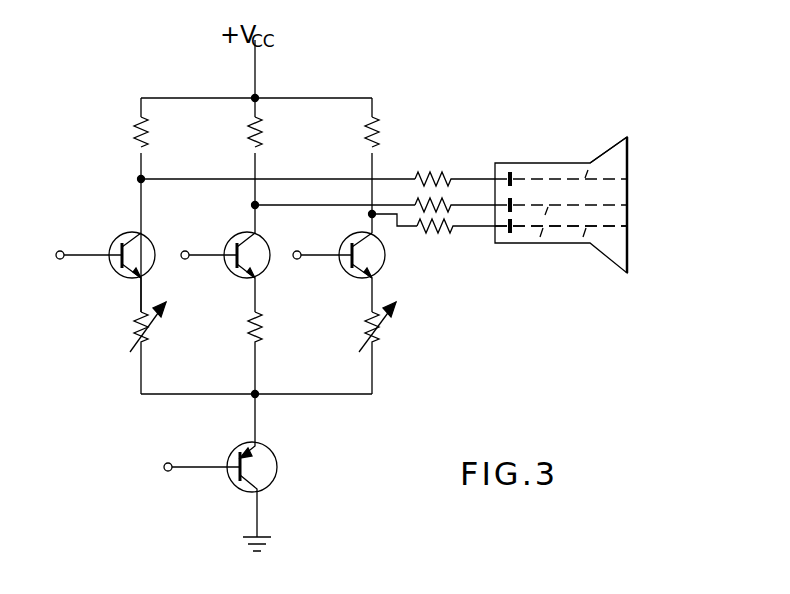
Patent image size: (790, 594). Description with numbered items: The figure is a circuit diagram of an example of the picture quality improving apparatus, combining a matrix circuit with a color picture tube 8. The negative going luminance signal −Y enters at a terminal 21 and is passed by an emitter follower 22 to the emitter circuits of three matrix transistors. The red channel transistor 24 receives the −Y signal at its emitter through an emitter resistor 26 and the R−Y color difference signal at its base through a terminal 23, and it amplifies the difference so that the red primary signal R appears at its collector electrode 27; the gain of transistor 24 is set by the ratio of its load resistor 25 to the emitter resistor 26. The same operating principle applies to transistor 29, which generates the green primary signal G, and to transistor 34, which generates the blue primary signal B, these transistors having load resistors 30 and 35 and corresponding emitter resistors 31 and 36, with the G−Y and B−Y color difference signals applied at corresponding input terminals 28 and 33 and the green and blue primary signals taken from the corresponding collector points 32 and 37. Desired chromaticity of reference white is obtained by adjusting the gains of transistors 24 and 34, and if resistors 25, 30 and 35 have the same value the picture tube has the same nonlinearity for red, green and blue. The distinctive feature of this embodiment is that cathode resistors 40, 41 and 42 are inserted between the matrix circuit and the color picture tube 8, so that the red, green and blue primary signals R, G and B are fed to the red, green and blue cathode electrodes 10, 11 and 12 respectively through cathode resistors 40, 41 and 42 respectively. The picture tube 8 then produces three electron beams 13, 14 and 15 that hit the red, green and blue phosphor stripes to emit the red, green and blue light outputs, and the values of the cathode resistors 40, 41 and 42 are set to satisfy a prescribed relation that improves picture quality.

The color picture tube 8 is at (577, 163).
The cathode electrode 10 is at (506, 170).
The cathode electrode 11 is at (512, 200).
The cathode electrode 12 is at (508, 242).
The electron beam 13 is at (585, 162).
The electron beam 14 is at (540, 245).
The electron beam 15 is at (582, 250).
The terminal 21 is at (172, 472).
The emitter follower 22 is at (261, 461).
The terminal 23 is at (62, 261).
The transistor 24 is at (151, 263).
The load resistor 25 is at (147, 152).
The emitter resistor 26 is at (157, 345).
The collector electrode 27 is at (143, 227).
The G-Y input terminal 28 is at (186, 260).
The transistor 29 is at (262, 266).
The resistor 30 is at (261, 152).
The emitter resistor 31 is at (270, 347).
The collector output junction 32 is at (253, 222).
The B-Y input terminal 33 is at (300, 260).
The transistor 34 is at (379, 262).
The resistor 35 is at (378, 148).
The variable emitter resistor 36 is at (386, 349).
The collector output junction 37 is at (373, 232).
The cathode resistor 40 is at (429, 172).
The cathode resistor 41 is at (452, 200).
The cathode resistor 42 is at (436, 238).